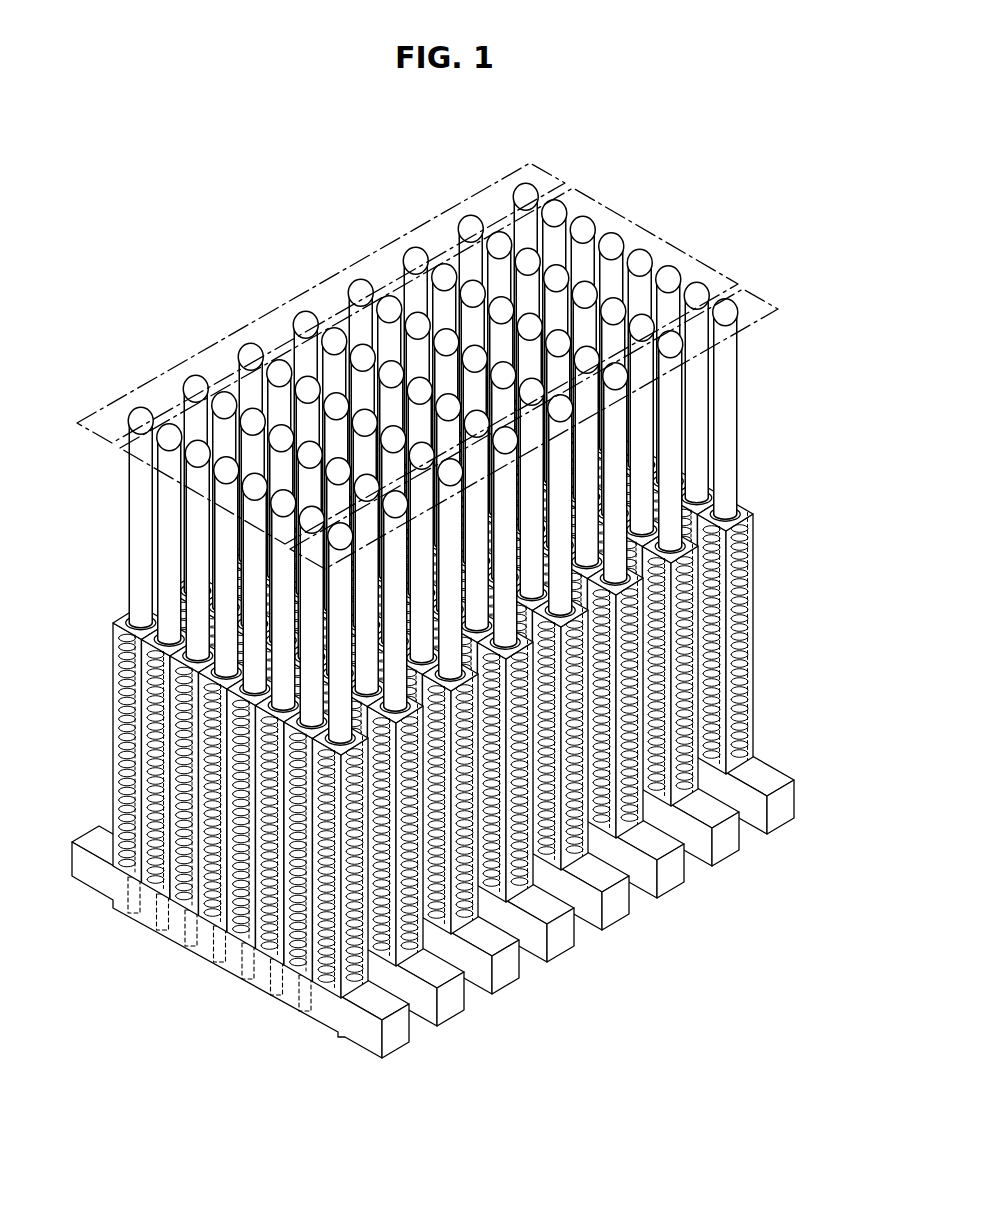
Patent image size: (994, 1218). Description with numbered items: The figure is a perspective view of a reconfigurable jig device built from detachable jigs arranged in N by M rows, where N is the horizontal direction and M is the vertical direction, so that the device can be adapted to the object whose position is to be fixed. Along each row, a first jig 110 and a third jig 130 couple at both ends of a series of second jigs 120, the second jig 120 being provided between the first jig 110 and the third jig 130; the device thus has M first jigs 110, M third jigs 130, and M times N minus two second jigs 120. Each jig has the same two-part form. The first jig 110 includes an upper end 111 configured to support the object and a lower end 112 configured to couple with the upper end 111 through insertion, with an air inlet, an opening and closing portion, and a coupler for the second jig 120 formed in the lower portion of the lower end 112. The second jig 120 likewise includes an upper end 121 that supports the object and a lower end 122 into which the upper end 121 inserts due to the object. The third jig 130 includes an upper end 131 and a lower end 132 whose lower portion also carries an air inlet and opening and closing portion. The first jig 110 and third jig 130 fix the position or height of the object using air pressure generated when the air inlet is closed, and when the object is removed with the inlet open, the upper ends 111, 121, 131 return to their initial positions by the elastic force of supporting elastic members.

The first jig 110 is at (548, 165).
The upper end 111 is at (131, 508).
The lower end 112 is at (114, 680).
The second jig 120 is at (657, 232).
The upper end 121 is at (159, 583).
The lower end 122 is at (148, 777).
The third jig 130 is at (760, 295).
The upper end 131 is at (771, 410).
The lower end 132 is at (773, 636).